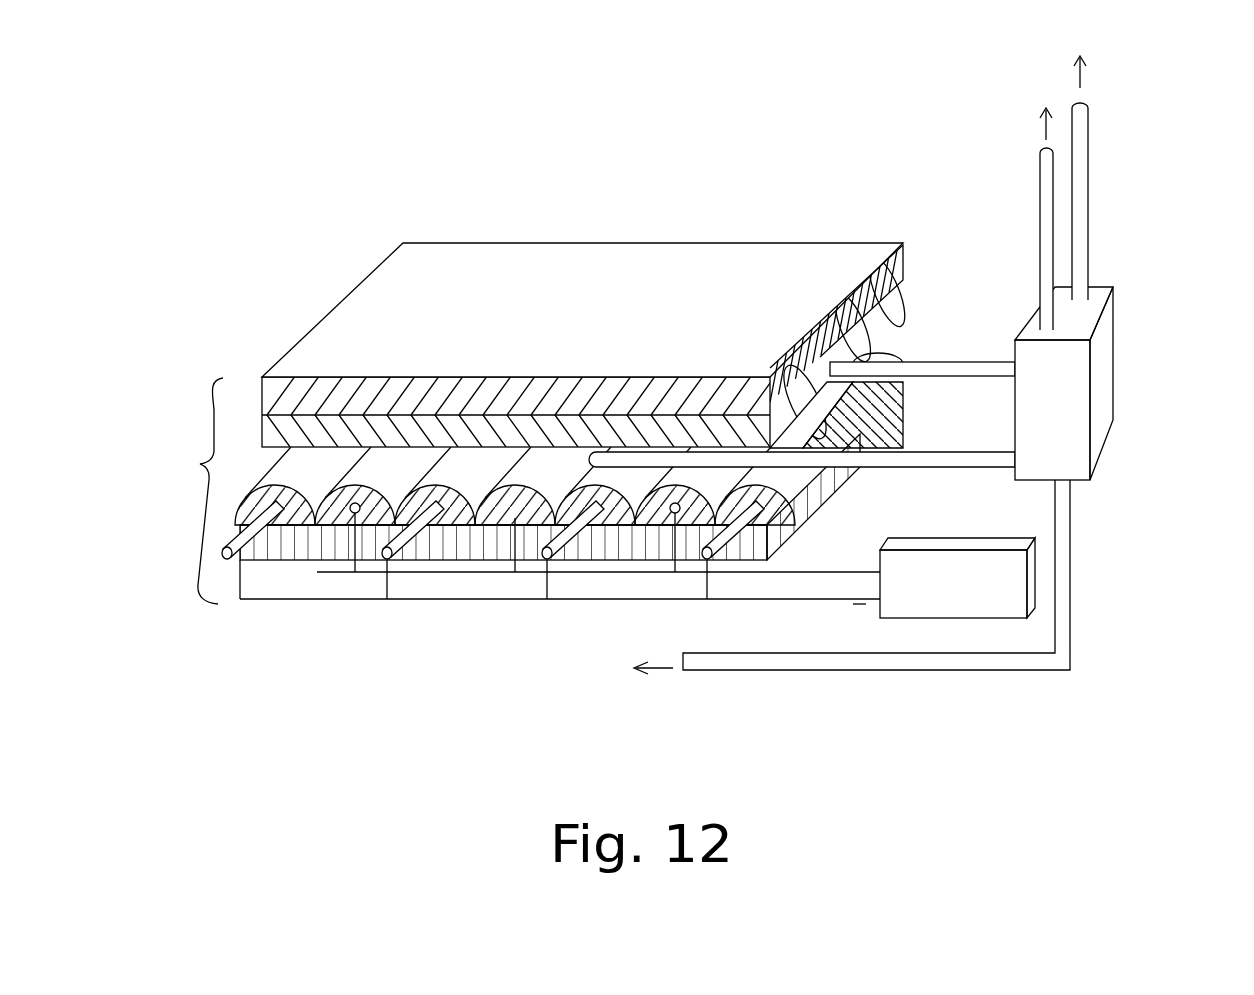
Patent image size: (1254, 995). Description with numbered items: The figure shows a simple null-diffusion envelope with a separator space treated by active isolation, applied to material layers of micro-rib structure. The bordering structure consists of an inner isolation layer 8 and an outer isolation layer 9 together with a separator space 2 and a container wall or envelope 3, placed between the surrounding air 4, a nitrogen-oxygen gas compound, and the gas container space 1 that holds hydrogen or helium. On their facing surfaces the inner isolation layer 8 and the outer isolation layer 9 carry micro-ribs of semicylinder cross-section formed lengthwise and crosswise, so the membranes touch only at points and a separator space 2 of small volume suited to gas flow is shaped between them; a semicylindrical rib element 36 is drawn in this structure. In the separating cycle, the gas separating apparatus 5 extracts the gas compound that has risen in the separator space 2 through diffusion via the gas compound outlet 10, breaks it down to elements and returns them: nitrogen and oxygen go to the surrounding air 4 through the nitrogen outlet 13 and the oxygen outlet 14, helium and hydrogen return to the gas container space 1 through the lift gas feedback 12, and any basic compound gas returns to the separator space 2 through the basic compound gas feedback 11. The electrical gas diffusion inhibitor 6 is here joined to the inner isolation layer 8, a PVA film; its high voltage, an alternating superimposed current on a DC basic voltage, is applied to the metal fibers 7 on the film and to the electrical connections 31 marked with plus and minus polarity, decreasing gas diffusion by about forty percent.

The gas container space 1 is at (285, 617).
The separator space 2 is at (287, 447).
The container wall or envelope 3 is at (335, 278).
The surrounding air 4 is at (195, 491).
The gas separating apparatus 5 is at (1113, 380).
The electrical gas diffusion inhibitor 6 is at (1075, 583).
The metal fibers 7 is at (408, 533).
The inner isolation layer 8 is at (253, 567).
The outer isolation layer 9 is at (292, 378).
The gas compound outlet 10 is at (940, 362).
The basic compound gas feedback 11 is at (953, 452).
The lift gas feedback 12 is at (903, 670).
The nitrogen outlet 13 is at (1090, 183).
The oxygen outlet 14 is at (1053, 257).
The electrical connections 31 is at (821, 572).
The coil tubes 36 is at (897, 242).